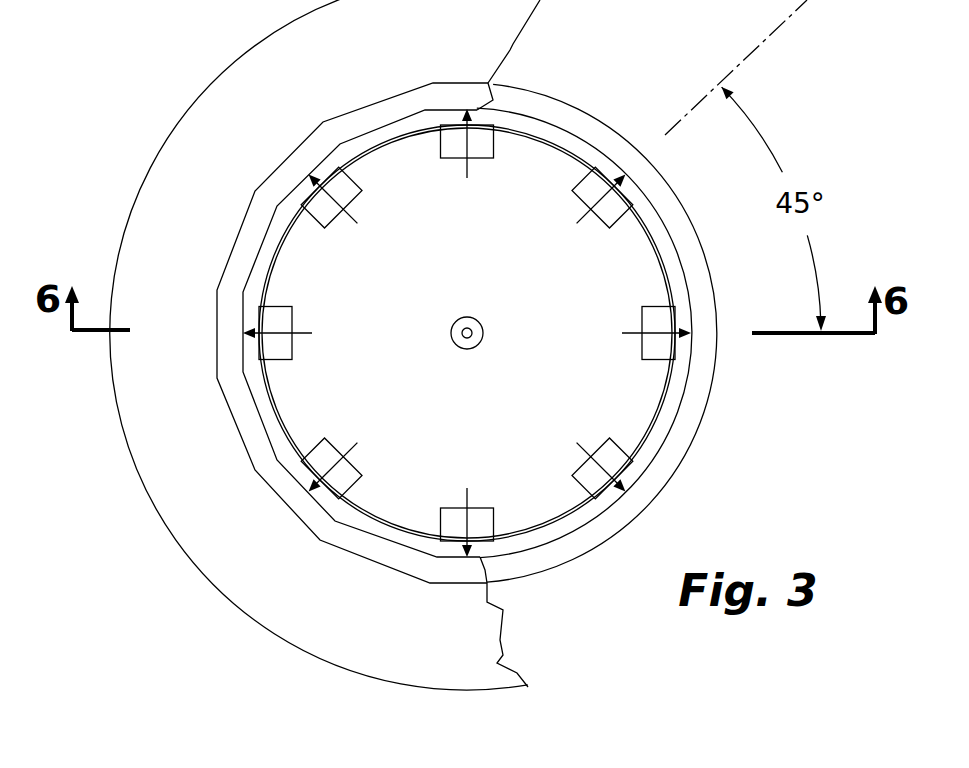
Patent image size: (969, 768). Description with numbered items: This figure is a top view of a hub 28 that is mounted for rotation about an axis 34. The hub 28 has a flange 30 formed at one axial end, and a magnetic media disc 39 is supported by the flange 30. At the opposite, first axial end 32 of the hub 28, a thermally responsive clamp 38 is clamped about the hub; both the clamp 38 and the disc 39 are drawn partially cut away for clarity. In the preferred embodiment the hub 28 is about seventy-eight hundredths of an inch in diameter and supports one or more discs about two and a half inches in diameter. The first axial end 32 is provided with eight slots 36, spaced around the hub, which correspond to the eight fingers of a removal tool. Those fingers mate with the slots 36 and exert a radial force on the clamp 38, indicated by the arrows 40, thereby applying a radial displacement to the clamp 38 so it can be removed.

The hub 28 is at (453, 403).
The flange 30 is at (707, 405).
The first axial end 32 is at (650, 438).
The axis 34 is at (480, 324).
The slots 36 is at (481, 160).
The thermally responsive clamp 38 is at (383, 100).
The magnetic media disc 39 is at (187, 115).
The arrows 40 is at (468, 146).